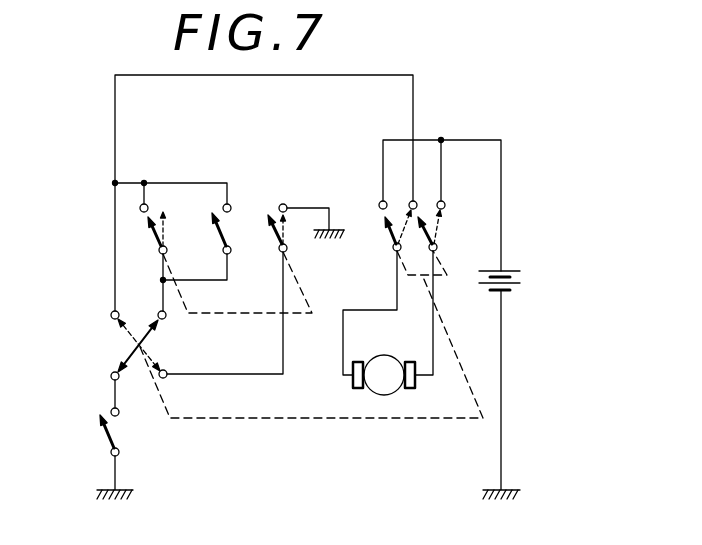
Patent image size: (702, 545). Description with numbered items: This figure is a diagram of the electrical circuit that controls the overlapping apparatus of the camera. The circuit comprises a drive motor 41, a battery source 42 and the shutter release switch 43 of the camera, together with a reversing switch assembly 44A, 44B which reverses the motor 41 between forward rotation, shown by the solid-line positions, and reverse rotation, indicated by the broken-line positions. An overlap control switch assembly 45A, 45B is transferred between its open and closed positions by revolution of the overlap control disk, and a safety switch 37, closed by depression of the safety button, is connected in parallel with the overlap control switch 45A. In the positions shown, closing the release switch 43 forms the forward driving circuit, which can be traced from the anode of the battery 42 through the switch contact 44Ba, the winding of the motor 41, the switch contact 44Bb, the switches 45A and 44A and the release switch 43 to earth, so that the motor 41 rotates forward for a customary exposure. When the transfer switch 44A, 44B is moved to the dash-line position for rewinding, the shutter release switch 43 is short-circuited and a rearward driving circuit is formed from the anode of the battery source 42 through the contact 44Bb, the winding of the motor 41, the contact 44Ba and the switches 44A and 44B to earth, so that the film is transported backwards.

The safety switch 37 is at (224, 236).
The drive motor 41 is at (381, 366).
The battery source 42 is at (523, 277).
The shutter release switch 43 is at (107, 438).
The reversing switch 44A is at (133, 350).
The reversing switch 44B is at (422, 215).
The switch contact 44Ba is at (392, 229).
The switch contact 44Bb is at (421, 214).
The overlap control switch 45A is at (156, 235).
The overlap control switch 45B is at (286, 231).